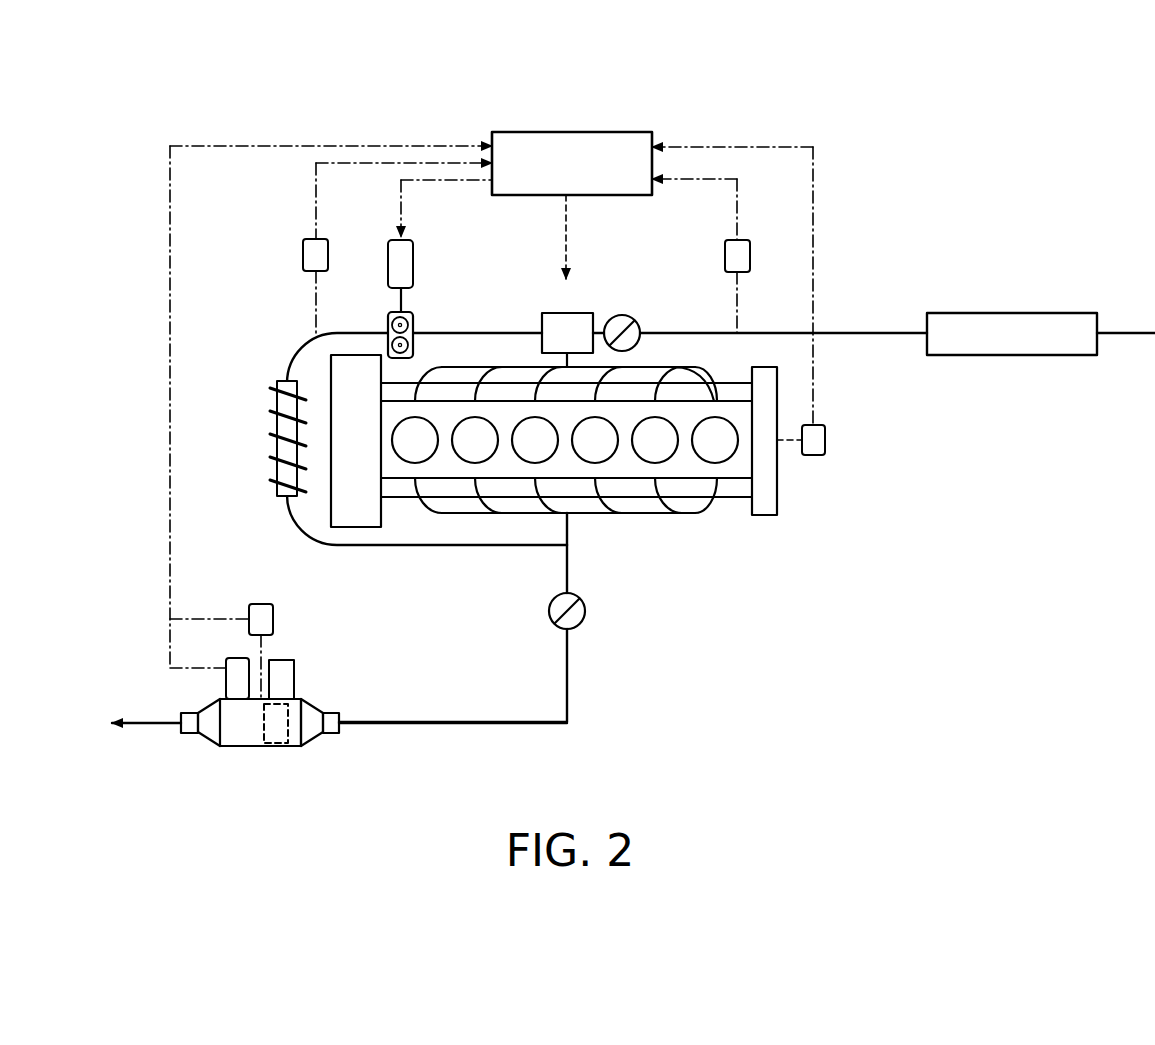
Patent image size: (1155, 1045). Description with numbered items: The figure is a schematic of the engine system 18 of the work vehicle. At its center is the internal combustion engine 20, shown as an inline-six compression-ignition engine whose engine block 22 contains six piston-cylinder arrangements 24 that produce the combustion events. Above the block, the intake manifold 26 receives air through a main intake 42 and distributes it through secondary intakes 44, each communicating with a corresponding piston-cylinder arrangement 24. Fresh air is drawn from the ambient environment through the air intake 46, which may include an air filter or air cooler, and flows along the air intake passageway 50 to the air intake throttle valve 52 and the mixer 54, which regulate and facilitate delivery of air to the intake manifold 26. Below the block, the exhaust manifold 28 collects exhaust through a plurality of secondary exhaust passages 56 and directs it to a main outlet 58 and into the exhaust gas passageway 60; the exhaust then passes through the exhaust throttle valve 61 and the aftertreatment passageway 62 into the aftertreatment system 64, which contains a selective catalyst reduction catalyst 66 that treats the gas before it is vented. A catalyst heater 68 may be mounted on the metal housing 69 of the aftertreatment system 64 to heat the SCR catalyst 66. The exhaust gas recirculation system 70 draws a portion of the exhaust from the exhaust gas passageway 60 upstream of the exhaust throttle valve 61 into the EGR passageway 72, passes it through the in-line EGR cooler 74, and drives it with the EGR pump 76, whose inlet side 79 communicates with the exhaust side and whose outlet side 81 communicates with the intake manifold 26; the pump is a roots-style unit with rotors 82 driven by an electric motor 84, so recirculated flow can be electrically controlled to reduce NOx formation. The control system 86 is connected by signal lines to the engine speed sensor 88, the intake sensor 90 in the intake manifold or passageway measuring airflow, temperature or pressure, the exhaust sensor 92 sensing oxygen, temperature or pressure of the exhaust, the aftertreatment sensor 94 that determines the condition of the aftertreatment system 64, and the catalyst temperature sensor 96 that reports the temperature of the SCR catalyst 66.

The engine system 18 is at (1037, 158).
The internal combustion engine 20 is at (833, 478).
The engine block 22 is at (778, 480).
The piston-cylinder arrangements 24 is at (403, 453).
The intake manifold 26 is at (721, 366).
The exhaust manifold 28 is at (440, 528).
The main intake 42 is at (546, 367).
The secondary intakes 44 is at (679, 374).
The air intake 46 is at (1012, 313).
The air intake passageway 50 is at (864, 332).
The air intake throttle valve 52 is at (636, 318).
The mixer 54 is at (575, 312).
The secondary exhaust passages 56 is at (702, 514).
The main outlet 58 is at (566, 526).
The exhaust gas passageway 60 is at (567, 567).
The exhaust throttle valve 61 is at (584, 625).
The aftertreatment passageway 62 is at (147, 728).
The aftertreatment system 64 is at (262, 764).
The selective catalyst reduction catalyst 66 is at (285, 720).
The catalyst heater 68 is at (283, 660).
The metal housing 69 is at (295, 742).
The exhaust gas recirculation system 70 is at (265, 342).
The EGR passageway 72 is at (483, 333).
The EGR cooler 74 is at (272, 440).
The EGR pump 76 is at (447, 286).
The inlet side 79 is at (386, 321).
The outlet side 81 is at (424, 315).
The rotors 82 is at (405, 315).
The electric motor 84 is at (388, 268).
The control system 86 is at (607, 195).
The engine speed sensor 88 is at (825, 440).
The intake sensor 90 is at (751, 258).
The exhaust sensor 92 is at (303, 256).
The aftertreatment sensor 94 is at (273, 606).
The catalyst temperature sensor 96 is at (226, 682).